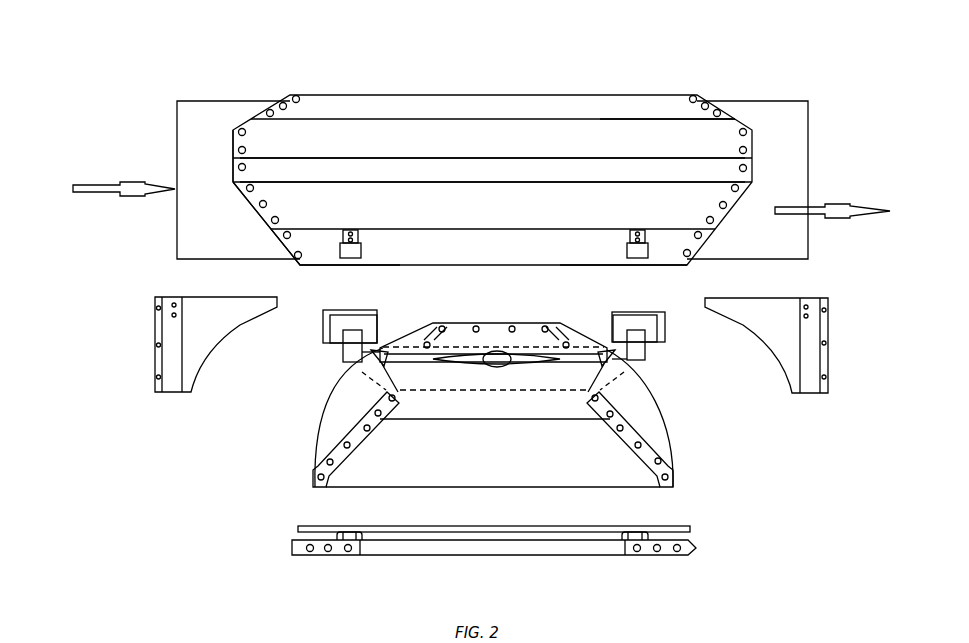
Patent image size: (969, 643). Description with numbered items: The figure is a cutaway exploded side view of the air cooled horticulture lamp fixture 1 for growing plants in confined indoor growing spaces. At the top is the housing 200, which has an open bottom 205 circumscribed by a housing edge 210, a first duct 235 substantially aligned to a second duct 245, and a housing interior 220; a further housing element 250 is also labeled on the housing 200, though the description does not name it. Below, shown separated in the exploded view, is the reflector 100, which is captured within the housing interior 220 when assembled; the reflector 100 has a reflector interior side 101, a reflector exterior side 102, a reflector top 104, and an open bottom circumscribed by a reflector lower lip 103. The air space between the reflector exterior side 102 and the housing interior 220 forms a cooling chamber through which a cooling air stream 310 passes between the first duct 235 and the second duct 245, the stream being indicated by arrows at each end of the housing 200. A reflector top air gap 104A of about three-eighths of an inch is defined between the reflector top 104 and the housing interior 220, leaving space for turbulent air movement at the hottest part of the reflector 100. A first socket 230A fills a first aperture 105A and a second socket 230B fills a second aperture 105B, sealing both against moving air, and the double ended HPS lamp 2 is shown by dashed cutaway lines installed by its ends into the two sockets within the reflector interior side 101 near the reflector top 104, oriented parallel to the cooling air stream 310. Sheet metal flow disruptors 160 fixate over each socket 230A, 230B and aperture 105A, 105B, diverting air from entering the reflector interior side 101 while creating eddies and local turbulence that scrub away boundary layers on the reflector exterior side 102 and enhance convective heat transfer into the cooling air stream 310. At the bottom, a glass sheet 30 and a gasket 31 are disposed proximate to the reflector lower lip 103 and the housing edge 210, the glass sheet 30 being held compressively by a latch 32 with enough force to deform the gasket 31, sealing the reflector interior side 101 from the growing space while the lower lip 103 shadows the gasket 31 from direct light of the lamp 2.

The air cooled horticulture lamp fixture 1 is at (118, 90).
The housing 200 is at (548, 78).
The first duct 235 is at (197, 118).
The second duct 245 is at (780, 128).
The central beam 250 is at (431, 138).
The housing interior 220 is at (625, 138).
The cooling air stream 310 is at (466, 201).
The housing edge 210 is at (362, 268).
The open bottom 205 is at (596, 272).
The flow disruptor 160 is at (210, 378).
The first socket 230A is at (322, 333).
The second socket 230B is at (668, 330).
The reflector top 104 is at (485, 313).
The reflector top air gap 104A is at (418, 322).
The first aperture 105A is at (384, 374).
The second aperture 105B is at (606, 374).
The lamp 2 is at (477, 373).
The reflector 100 is at (650, 420).
The reflector interior side 101 is at (393, 452).
The reflector exterior side 102 is at (537, 447).
The reflector lower lip 103 is at (357, 497).
The glass sheet 30 is at (490, 527).
The gasket 31 is at (610, 527).
The latch 32 is at (353, 558).